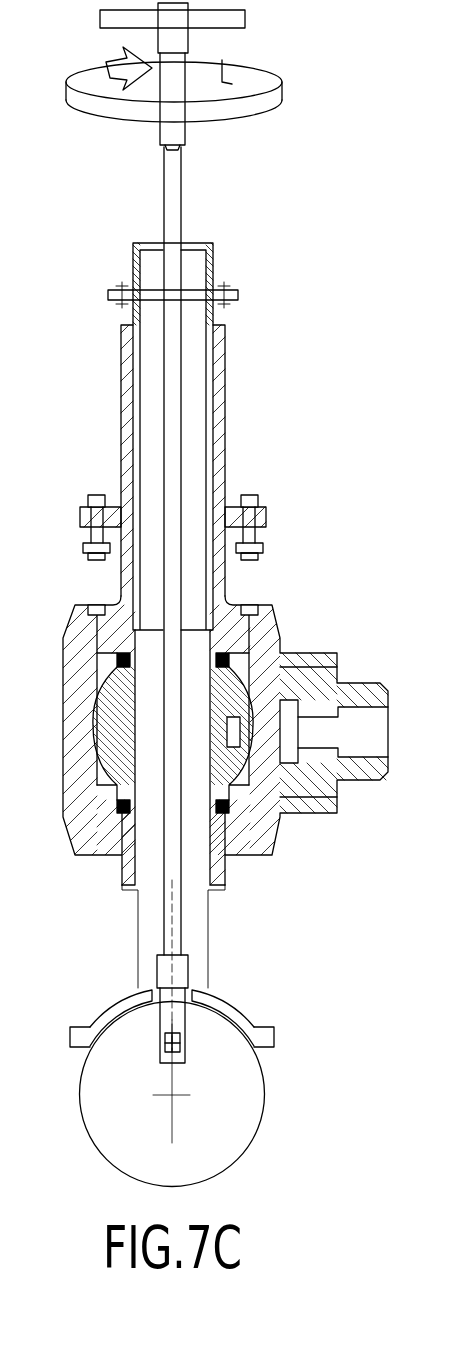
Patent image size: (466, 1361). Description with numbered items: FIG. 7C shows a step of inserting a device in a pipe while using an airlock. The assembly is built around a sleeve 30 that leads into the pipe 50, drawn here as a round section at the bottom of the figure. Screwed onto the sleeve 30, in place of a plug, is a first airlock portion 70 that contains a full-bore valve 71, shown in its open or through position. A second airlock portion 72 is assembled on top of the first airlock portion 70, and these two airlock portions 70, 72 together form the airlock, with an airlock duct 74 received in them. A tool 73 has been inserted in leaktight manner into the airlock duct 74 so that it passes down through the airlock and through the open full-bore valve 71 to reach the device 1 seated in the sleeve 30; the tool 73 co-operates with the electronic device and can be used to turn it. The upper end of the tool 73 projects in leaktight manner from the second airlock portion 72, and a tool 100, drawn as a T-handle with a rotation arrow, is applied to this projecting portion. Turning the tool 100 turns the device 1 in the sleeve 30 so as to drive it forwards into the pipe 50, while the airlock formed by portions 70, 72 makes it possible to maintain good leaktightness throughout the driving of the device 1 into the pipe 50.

The tool 100 is at (100, 17).
The tool 73 is at (166, 197).
The airlock duct 74 is at (207, 415).
The second airlock portion 72 is at (121, 405).
The first airlock portion 70 is at (80, 838).
The full-bore valve 71 is at (97, 715).
The sleeve 30 is at (138, 930).
The device 1 is at (193, 988).
The pipe 50 is at (80, 1095).